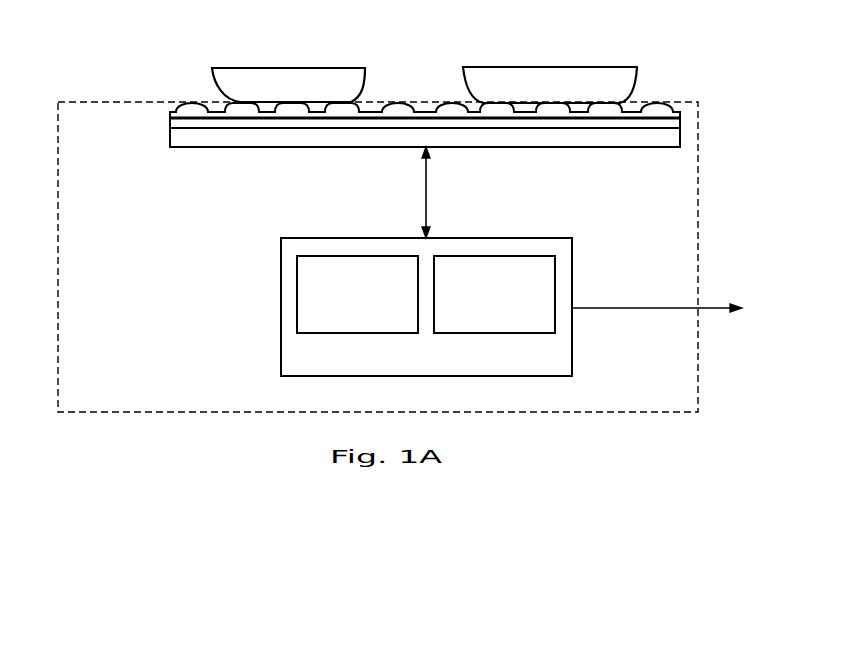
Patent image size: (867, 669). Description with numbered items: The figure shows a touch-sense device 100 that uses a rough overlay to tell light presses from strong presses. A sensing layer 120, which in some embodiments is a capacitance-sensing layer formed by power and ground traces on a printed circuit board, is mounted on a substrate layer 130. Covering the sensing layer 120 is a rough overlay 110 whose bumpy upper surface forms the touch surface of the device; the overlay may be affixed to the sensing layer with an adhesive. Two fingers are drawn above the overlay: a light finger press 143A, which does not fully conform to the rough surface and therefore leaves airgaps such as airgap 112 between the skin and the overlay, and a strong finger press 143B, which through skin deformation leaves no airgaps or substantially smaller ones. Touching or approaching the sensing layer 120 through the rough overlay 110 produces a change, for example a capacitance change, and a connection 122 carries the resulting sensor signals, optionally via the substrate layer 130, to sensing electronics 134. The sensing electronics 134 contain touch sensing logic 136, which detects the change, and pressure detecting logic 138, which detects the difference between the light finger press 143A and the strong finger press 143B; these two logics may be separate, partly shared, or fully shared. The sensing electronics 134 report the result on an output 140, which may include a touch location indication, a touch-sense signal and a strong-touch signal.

The touch-sense device 100 is at (303, 406).
The rough overlay 110 is at (170, 113).
The airgap 112 is at (324, 106).
The sensing layer 120 is at (170, 124).
The connection 122 is at (428, 187).
The substrate layer 130 is at (218, 147).
The sensing electronics 134 is at (537, 373).
The touch sensing logic 136 is at (343, 326).
The pressure detecting logic 138 is at (480, 326).
The output 140 is at (628, 305).
The light finger press 143A is at (366, 67).
The strong finger press 143B is at (637, 67).